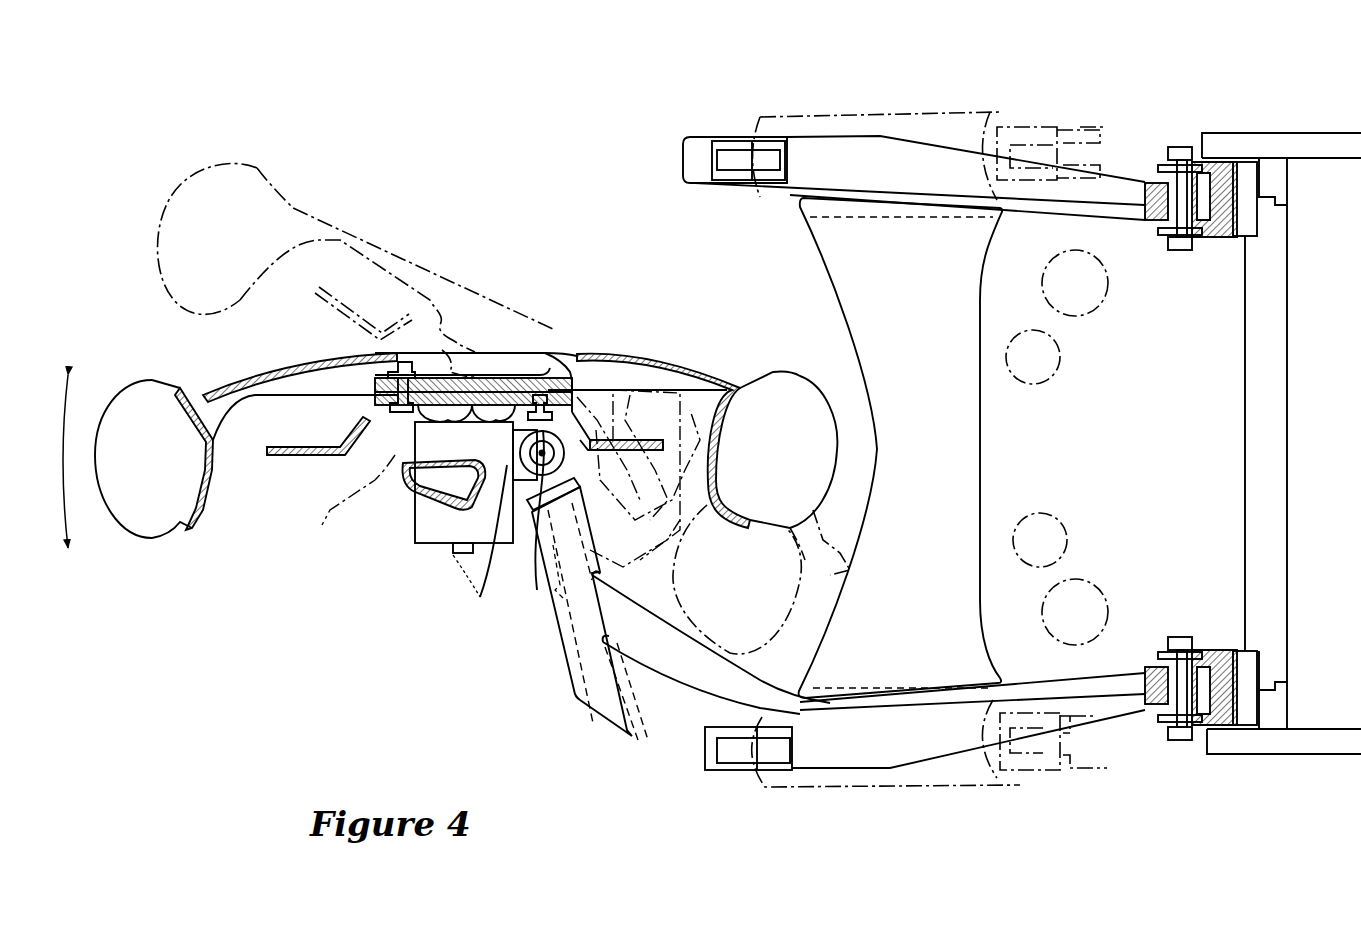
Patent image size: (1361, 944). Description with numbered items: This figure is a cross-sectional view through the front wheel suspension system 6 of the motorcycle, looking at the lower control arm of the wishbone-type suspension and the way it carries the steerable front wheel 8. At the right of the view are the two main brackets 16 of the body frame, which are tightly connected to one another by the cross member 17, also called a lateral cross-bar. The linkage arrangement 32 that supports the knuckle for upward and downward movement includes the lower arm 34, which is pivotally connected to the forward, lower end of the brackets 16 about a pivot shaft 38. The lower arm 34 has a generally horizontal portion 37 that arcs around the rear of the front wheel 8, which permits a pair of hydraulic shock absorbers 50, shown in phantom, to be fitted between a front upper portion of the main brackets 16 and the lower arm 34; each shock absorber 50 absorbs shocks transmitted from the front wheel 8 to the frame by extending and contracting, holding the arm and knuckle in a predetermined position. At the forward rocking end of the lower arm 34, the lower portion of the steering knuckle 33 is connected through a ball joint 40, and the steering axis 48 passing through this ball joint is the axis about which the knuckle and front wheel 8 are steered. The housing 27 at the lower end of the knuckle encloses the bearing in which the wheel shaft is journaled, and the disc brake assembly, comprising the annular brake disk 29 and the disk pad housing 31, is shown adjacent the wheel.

The front wheel suspension system 6 is at (1077, 100).
The front wheel 8 is at (761, 513).
The main brackets 16 is at (1265, 135).
The cross member 17 is at (1290, 442).
The housing 27 is at (396, 454).
The brake disk 29 is at (645, 500).
The disk pad housing 31 is at (725, 473).
The linkage arrangement 32 is at (917, 773).
The steering knuckle 33 is at (480, 597).
The lower arm 34 is at (862, 755).
The horizontal portion 37 is at (978, 448).
The pivot shaft 38 is at (1180, 147).
The ball joint 40 is at (555, 543).
The steering axis 48 is at (551, 393).
The hydraulic shock absorber 50 is at (905, 112).